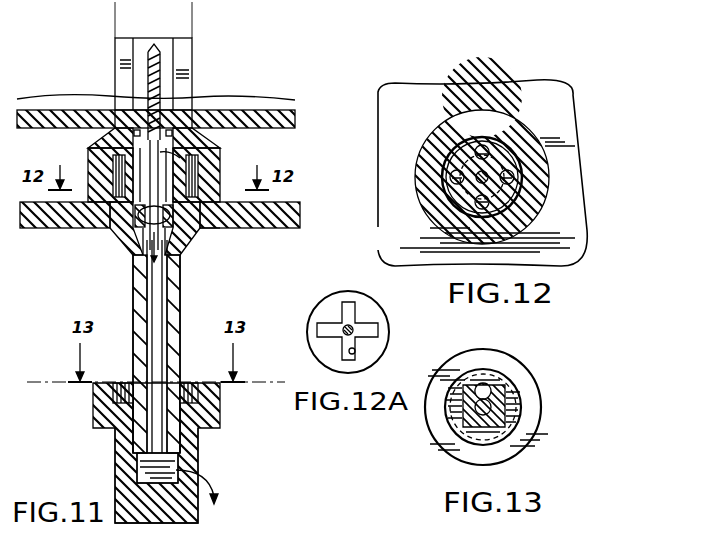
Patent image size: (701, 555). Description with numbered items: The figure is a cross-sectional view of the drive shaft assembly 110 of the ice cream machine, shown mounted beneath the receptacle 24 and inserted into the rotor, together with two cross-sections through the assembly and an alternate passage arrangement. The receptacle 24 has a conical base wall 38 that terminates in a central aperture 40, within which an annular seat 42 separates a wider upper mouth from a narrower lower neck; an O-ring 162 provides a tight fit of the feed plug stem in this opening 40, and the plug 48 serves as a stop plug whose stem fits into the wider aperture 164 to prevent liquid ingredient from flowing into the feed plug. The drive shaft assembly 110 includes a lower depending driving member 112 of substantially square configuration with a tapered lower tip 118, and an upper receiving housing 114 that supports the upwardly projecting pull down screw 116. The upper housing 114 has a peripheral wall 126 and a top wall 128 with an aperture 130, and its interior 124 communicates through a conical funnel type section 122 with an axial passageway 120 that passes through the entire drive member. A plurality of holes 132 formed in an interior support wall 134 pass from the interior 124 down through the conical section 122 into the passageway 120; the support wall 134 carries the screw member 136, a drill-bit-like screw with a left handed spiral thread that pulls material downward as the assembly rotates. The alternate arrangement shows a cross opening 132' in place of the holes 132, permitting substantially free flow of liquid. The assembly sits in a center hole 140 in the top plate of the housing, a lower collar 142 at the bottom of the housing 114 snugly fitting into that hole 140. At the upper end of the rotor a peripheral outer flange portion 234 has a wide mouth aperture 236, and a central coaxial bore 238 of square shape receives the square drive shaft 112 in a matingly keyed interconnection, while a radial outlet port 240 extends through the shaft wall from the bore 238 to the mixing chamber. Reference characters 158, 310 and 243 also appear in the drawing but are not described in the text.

In FIG. 11, the plug 48 is at (205, 14).
In FIG. 11, the wider aperture 164 is at (138, 50).
In FIG. 11, the central aperture 40 is at (140, 118).
In FIG. 11, the pull down screw 116 is at (160, 63).
In FIG. 11, the screw member 136 is at (158, 82).
In FIG. 12, the screw member 136 is at (482, 170).
In FIG. 12A, the screw member 136 is at (353, 329).
In FIG. 11, the housing 158 is at (185, 88).
In FIG. 11, the conical base wall 38 is at (200, 100).
In FIG. 11, the annular seat 42 is at (175, 115).
In FIG. 11, the receptacle 24 is at (308, 117).
In FIG. 11, the O-ring 162 is at (200, 145).
In FIG. 11, the upper receiving housing 114 is at (220, 163).
In FIG. 11, the aperture 130 is at (113, 180).
In FIG. 11, the top wall 128 is at (190, 152).
In FIG. 11, the peripheral wall 126 is at (300, 208).
In FIG. 12, the peripheral wall 126 is at (472, 118).
In FIG. 11, the interior 124 is at (70, 228).
In FIG. 12, the interior 124 is at (513, 125).
In FIG. 11, the lower collar 142 is at (122, 210).
In FIG. 11, the interior support wall 134 is at (142, 230).
In FIG. 12, the interior support wall 134 is at (505, 195).
In FIG. 12A, the interior support wall 134 is at (362, 305).
In FIG. 11, the conical funnel type section 122 is at (143, 240).
In FIG. 11, the center hole 140 is at (230, 230).
In FIG. 11, the holes 132 is at (181, 233).
In FIG. 12, the holes 132 is at (537, 174).
In FIG. 11, the drive shaft assembly 110 is at (200, 288).
In FIG. 11, the lower depending driving member 112 is at (173, 318).
In FIG. 13, the lower depending driving member 112 is at (505, 410).
In FIG. 11, the axial passageway 120 is at (153, 320).
In FIG. 13, the axial passageway 120 is at (492, 400).
In FIG. 11, the wide mouth aperture 236 is at (192, 380).
In FIG. 13, the wide mouth aperture 236 is at (510, 427).
In FIG. 11, the peripheral outer flange portion 234 is at (208, 407).
In FIG. 11, the tapered lower tip 118 is at (177, 437).
In FIG. 11, the central coaxial bore 238 is at (145, 463).
In FIG. 13, the central coaxial bore 238 is at (512, 396).
In FIG. 11, the radial outlet port 240 is at (182, 468).
In FIG. 11, the outlet 310 is at (192, 553).
In FIG. 12A, the cross opening 132' is at (385, 354).
In FIG. 13, the outer ring 243 is at (517, 450).